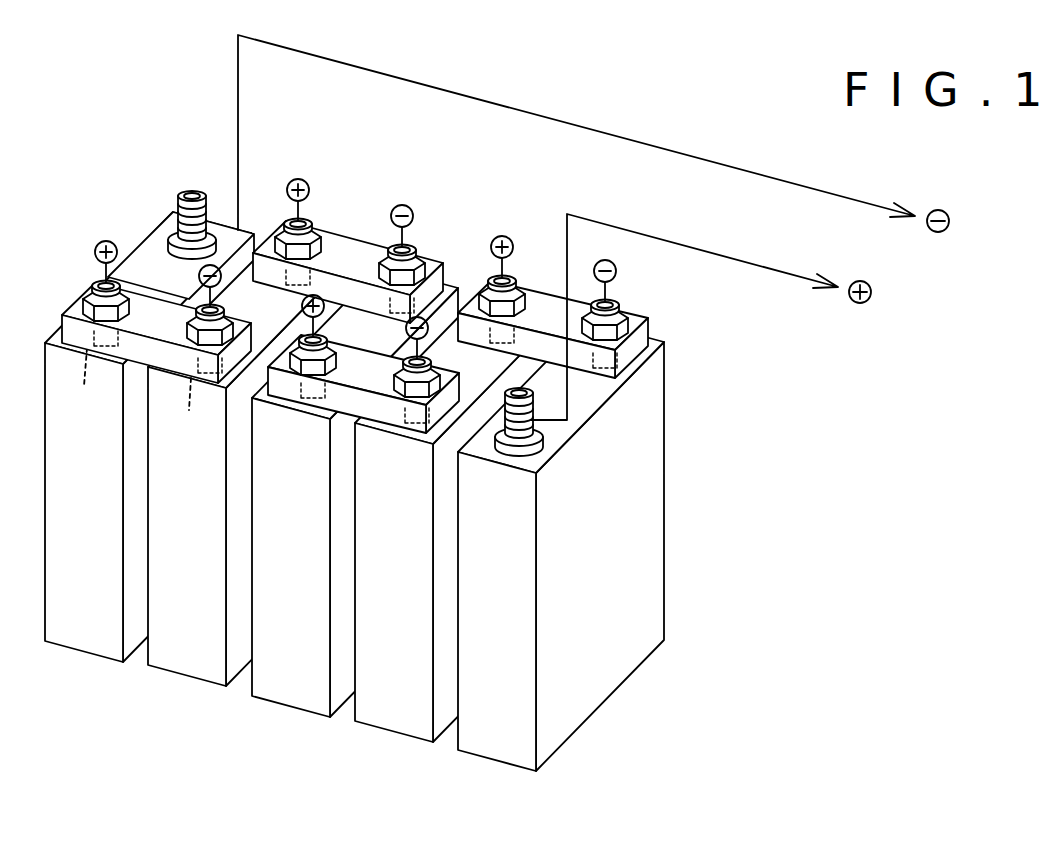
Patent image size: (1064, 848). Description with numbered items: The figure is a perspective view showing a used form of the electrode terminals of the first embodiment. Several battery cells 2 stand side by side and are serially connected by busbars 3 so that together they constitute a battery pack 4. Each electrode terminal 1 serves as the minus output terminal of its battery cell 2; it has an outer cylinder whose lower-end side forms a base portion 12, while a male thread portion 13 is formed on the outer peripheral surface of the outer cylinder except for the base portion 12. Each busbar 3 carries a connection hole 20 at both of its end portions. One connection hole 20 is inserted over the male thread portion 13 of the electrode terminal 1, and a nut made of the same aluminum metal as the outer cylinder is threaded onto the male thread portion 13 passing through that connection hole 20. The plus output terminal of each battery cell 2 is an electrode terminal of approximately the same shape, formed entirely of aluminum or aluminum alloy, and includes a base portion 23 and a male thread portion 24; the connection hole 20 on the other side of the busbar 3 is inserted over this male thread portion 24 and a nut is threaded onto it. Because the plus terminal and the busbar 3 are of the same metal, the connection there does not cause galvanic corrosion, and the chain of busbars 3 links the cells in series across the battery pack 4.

The electrode terminal 1 is at (208, 169).
The battery cell 2 is at (87, 642).
The busbar 3 is at (348, 246).
The battery pack 4 is at (495, 416).
The base portion 12 is at (167, 230).
The male thread portion 13 is at (178, 208).
The connection hole 20 is at (133, 394).
The base portion 23 is at (531, 447).
The male thread portion 24 is at (532, 415).